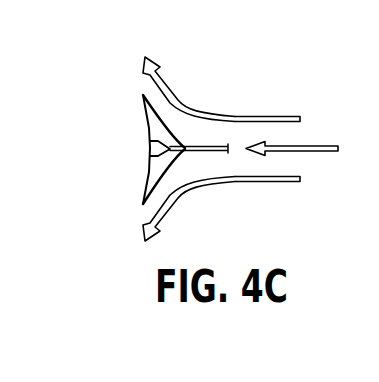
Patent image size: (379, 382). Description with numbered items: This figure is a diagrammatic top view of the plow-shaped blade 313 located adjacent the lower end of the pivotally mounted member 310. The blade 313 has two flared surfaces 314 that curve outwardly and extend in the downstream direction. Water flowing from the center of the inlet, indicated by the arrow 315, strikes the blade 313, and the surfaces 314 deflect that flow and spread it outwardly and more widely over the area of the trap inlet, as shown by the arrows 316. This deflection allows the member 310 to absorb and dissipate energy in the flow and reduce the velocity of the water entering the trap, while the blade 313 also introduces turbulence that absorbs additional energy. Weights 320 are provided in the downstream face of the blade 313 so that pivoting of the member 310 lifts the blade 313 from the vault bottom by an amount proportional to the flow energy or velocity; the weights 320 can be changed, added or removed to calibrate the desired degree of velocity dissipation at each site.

The member 310 is at (209, 146).
The plow-shaped blade 313 is at (117, 110).
The flared surfaces 314 is at (169, 88).
The arrow 315 is at (318, 146).
The arrows 316 is at (272, 116).
The weights 320 is at (150, 147).